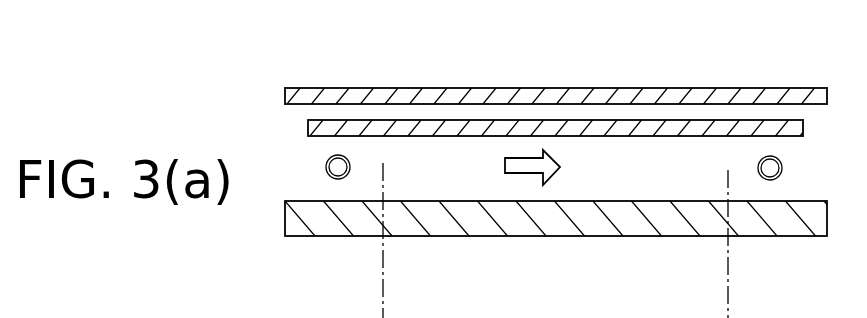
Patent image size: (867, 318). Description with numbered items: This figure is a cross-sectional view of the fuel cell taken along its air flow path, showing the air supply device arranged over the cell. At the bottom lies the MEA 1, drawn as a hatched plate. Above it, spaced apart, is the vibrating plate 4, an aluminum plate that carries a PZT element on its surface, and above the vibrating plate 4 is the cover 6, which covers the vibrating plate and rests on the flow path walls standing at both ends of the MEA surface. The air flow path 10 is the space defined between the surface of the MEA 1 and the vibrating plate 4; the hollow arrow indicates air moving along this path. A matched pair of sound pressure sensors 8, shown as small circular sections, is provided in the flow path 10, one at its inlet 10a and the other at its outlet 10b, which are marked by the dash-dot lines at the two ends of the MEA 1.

The MEA 1 is at (670, 228).
The vibrating plate 4 is at (451, 130).
The cover 6 is at (630, 92).
The sound pressure sensor 8 is at (326, 160).
The air flow path 10 is at (583, 175).
The inlet 10a is at (324, 183).
The outlet 10b is at (787, 188).